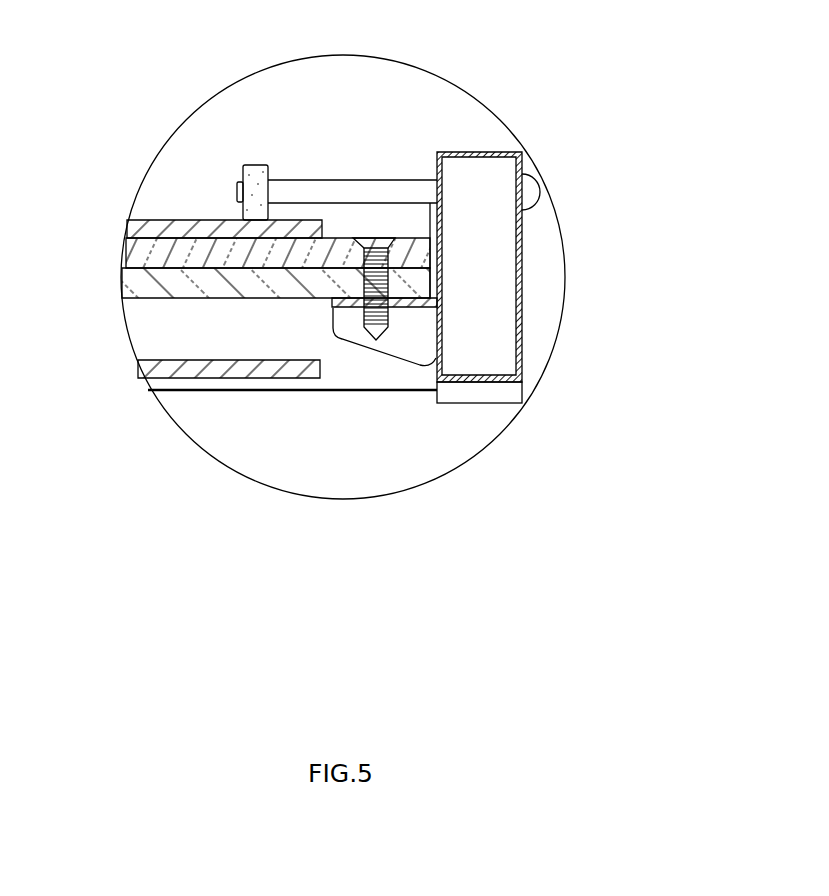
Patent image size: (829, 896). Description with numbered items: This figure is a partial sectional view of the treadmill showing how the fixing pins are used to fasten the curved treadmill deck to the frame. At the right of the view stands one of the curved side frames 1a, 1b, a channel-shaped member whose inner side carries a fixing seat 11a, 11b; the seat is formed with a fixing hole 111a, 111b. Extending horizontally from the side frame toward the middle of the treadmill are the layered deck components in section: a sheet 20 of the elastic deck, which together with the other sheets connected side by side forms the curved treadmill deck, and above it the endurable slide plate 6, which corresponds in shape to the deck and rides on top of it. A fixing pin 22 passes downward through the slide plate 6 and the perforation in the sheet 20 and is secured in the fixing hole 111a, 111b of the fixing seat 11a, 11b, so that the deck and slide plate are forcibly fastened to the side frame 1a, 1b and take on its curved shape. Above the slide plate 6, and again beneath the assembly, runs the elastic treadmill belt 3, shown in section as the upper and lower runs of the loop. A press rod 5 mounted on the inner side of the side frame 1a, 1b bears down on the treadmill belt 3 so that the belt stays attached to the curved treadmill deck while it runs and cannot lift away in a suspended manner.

The curved side frame 1a is at (465, 277).
The curved side frame 1b is at (518, 282).
The treadmill belt 3 is at (143, 228).
The press rod 5 is at (256, 166).
The endurable slide plate 6 is at (162, 258).
The sheet 20 is at (140, 290).
The fixing pin 22 is at (378, 236).
The fixing seat 11a is at (292, 441).
The fixing seat 11b is at (403, 345).
The fixing hole 111a is at (551, 373).
The fixing hole 111b is at (551, 373).